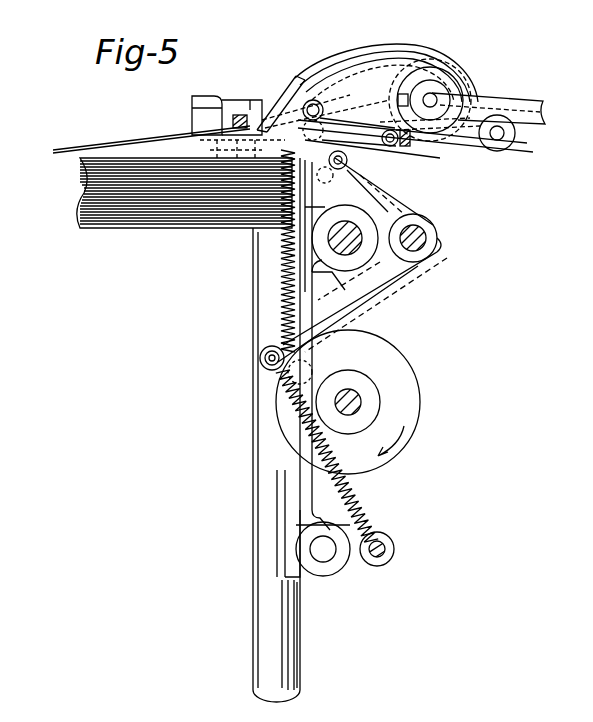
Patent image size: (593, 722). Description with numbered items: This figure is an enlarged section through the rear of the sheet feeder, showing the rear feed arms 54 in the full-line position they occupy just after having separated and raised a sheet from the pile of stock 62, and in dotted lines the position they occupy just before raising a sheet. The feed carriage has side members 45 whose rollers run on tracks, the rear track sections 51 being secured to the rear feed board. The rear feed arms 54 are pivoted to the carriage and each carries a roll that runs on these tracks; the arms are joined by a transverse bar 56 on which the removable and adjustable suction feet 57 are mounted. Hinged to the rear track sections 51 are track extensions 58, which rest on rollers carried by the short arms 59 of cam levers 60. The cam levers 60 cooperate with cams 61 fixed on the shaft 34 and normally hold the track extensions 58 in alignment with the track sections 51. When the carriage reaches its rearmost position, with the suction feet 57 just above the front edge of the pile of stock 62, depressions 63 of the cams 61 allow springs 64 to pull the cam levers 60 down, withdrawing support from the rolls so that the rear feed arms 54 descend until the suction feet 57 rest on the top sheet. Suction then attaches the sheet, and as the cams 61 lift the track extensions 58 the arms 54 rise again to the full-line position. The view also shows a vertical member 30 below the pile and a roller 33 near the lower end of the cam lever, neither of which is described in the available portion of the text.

The tube 30 is at (287, 633).
The roller 33 is at (298, 577).
The shaft 34 is at (363, 403).
The side members 45 is at (533, 110).
The rear track sections 51 is at (430, 140).
The rear feed arms 54 is at (457, 62).
The transverse bar 56 is at (266, 108).
The suction feet 57 is at (212, 112).
The track extensions 58 is at (375, 137).
The short arms 59 is at (392, 203).
The cam levers 60 is at (365, 295).
The cams 61 is at (407, 375).
The pile of stock 62 is at (77, 207).
The depressions 63 is at (318, 360).
The springs 64 is at (357, 503).